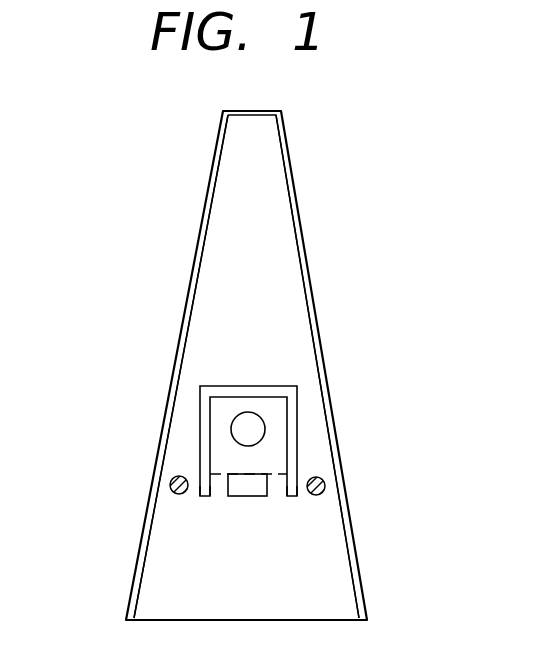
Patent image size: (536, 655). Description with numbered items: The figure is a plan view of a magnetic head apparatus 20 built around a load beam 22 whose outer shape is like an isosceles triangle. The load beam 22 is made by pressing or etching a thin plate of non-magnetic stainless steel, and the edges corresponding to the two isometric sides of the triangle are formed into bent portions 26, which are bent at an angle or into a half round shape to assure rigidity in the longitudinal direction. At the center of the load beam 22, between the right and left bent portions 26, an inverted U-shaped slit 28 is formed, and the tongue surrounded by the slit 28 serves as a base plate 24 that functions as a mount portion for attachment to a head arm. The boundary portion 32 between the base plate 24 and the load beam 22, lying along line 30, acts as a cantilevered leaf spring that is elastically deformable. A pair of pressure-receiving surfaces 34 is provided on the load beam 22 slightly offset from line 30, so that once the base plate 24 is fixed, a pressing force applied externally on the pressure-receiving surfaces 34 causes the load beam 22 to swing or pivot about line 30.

The magnetic head apparatus 20 is at (342, 192).
The load beam 22 is at (277, 260).
The base plate 24 is at (278, 434).
The bent portions 26 is at (185, 322).
The slit 28 is at (187, 459).
The line 30 is at (240, 473).
The boundary portion 32 is at (220, 492).
The pressure-receiving surfaces 34 is at (170, 485).